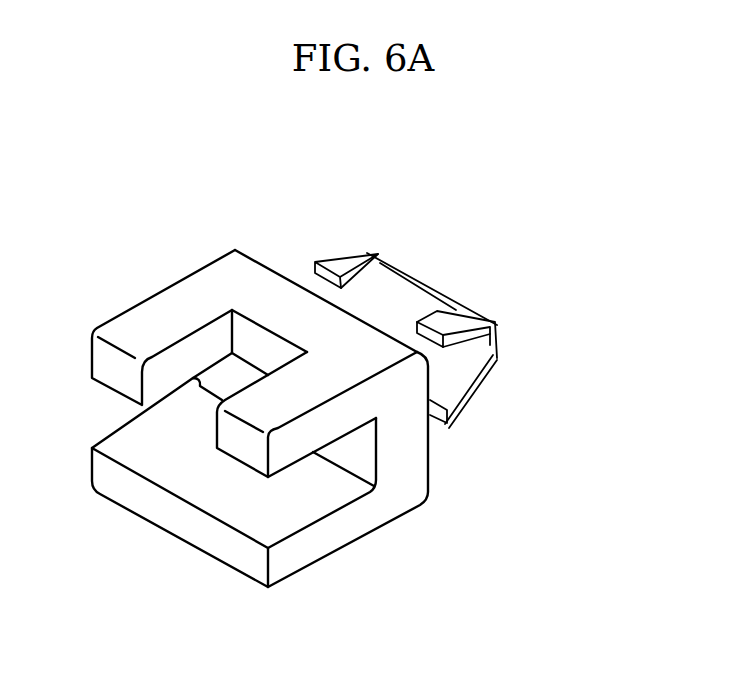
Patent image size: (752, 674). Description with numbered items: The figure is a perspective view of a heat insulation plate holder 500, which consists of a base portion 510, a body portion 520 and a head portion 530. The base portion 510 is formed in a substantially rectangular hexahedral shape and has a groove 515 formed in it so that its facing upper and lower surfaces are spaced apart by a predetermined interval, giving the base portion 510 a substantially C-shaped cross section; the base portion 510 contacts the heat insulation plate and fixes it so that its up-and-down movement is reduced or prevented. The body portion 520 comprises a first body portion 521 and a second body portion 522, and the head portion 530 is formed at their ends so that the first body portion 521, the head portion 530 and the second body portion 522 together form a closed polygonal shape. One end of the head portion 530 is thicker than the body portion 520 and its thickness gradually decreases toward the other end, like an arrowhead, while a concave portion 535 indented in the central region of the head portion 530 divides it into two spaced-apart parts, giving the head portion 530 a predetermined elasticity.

The heat insulation plate holder 500 is at (486, 241).
The base portion 510 is at (298, 558).
The groove 515 is at (201, 475).
The body portion 520 is at (541, 575).
The first body portion 521 is at (317, 283).
The second body portion 522 is at (432, 425).
The head portion 530 is at (364, 253).
The concave portion 535 is at (501, 350).